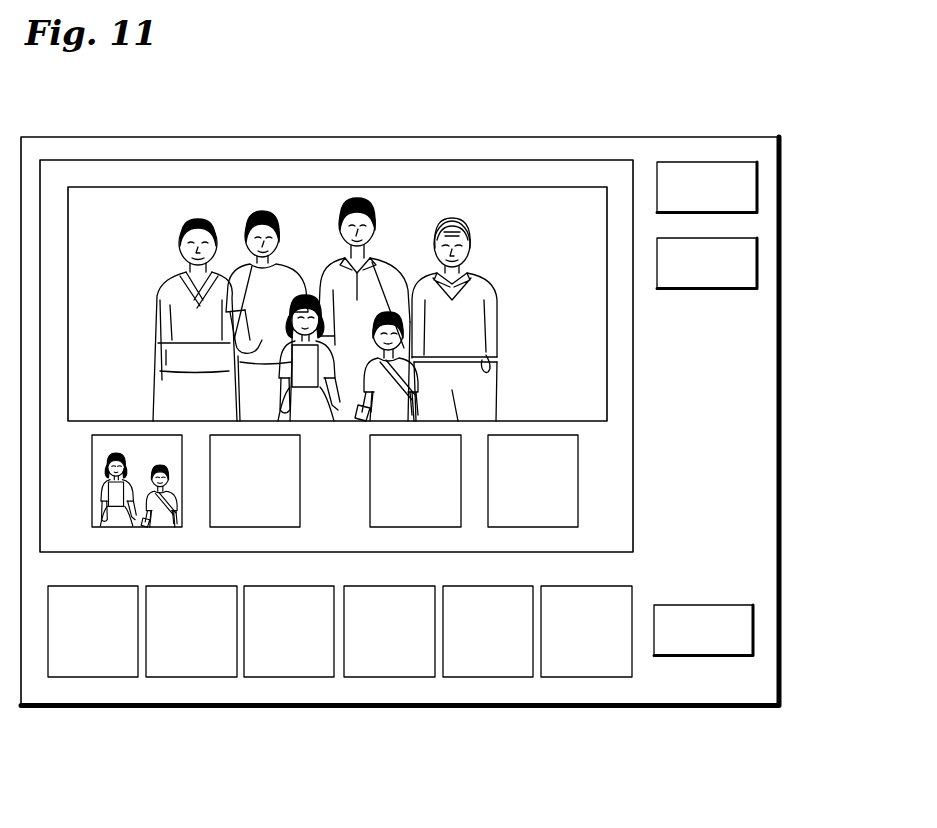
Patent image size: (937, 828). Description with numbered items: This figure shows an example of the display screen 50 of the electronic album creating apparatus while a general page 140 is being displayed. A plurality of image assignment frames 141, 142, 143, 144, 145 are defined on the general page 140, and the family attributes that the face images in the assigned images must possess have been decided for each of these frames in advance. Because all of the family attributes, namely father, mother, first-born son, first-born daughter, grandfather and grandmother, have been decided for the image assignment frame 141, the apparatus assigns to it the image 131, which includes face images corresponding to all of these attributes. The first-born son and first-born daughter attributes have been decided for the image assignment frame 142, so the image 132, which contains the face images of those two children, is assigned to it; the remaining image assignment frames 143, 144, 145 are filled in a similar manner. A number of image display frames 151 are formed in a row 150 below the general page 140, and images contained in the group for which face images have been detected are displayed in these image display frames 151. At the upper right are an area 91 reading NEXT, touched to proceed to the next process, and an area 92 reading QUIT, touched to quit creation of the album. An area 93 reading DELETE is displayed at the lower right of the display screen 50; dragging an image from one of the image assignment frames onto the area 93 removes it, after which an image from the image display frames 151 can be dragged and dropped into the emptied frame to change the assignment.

The display screen 50 is at (763, 402).
The NEXT area 91 is at (759, 190).
The QUIT area 92 is at (759, 267).
The DELETE area 93 is at (755, 628).
The image 131 is at (500, 265).
The image 132 is at (90, 474).
The general page 140 is at (388, 160).
The image assignment frame 141 is at (178, 187).
The image assignment frame 142 is at (126, 491).
The image assignment frame 143 is at (270, 527).
The image assignment frame 144 is at (370, 495).
The image assignment frame 145 is at (578, 493).
The selected image display area 150 is at (394, 643).
The image display frames 151 is at (102, 677).